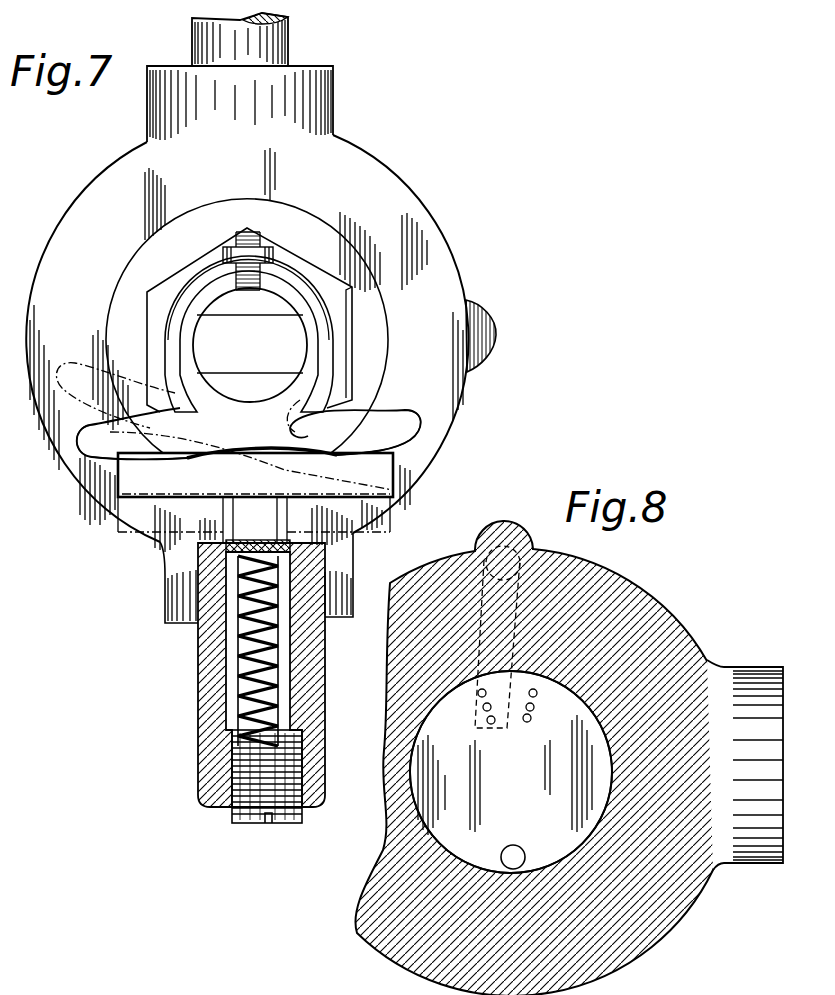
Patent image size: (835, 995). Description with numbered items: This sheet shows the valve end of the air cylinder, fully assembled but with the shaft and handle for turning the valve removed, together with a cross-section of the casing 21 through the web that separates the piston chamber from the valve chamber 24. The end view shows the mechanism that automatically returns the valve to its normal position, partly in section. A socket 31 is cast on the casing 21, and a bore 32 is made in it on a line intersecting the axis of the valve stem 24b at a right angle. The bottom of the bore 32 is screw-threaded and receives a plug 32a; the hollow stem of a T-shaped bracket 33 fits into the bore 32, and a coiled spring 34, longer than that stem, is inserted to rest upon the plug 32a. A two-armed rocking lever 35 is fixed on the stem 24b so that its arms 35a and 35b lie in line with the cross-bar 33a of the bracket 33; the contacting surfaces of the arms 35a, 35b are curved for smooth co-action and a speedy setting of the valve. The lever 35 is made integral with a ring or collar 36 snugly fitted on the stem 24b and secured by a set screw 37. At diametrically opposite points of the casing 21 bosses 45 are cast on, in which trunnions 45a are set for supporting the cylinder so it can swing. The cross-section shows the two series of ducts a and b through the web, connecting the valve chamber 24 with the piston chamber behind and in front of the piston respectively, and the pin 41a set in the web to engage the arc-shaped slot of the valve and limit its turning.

In FIG. 7, the casing 21 is at (407, 213).
In FIG. 8, the casing 21 is at (673, 570).
In FIG. 8, the valve chamber 24 is at (511, 772).
In FIG. 7, the stem of the valve 24b is at (250, 345).
In FIG. 7, the socket 31 is at (205, 700).
In FIG. 7, the bore 32 is at (295, 715).
In FIG. 7, the plug 32a is at (232, 820).
In FIG. 7, the T-shaped bracket 33 is at (235, 518).
In FIG. 7, the cross-bar of the T-shaped bracket 33a is at (255, 475).
In FIG. 7, the coiled spring 34 is at (247, 658).
In FIG. 7, the two-armed rocking lever 35 is at (264, 448).
In FIG. 7, the arm of the rocking lever 35a is at (100, 445).
In FIG. 7, the arm of the rocking lever 35b is at (410, 423).
In FIG. 7, the ring or collar 36 is at (283, 285).
In FIG. 7, the set screw 37 is at (242, 230).
In FIG. 8, the pin 41a is at (522, 848).
In FIG. 7, the boss 45 is at (333, 103).
In FIG. 8, the boss 45 is at (733, 667).
In FIG. 7, the trunnion 45a is at (292, 35).
In FIG. 8, the series of ducts a is at (487, 720).
In FIG. 8, the series of ducts b is at (531, 718).